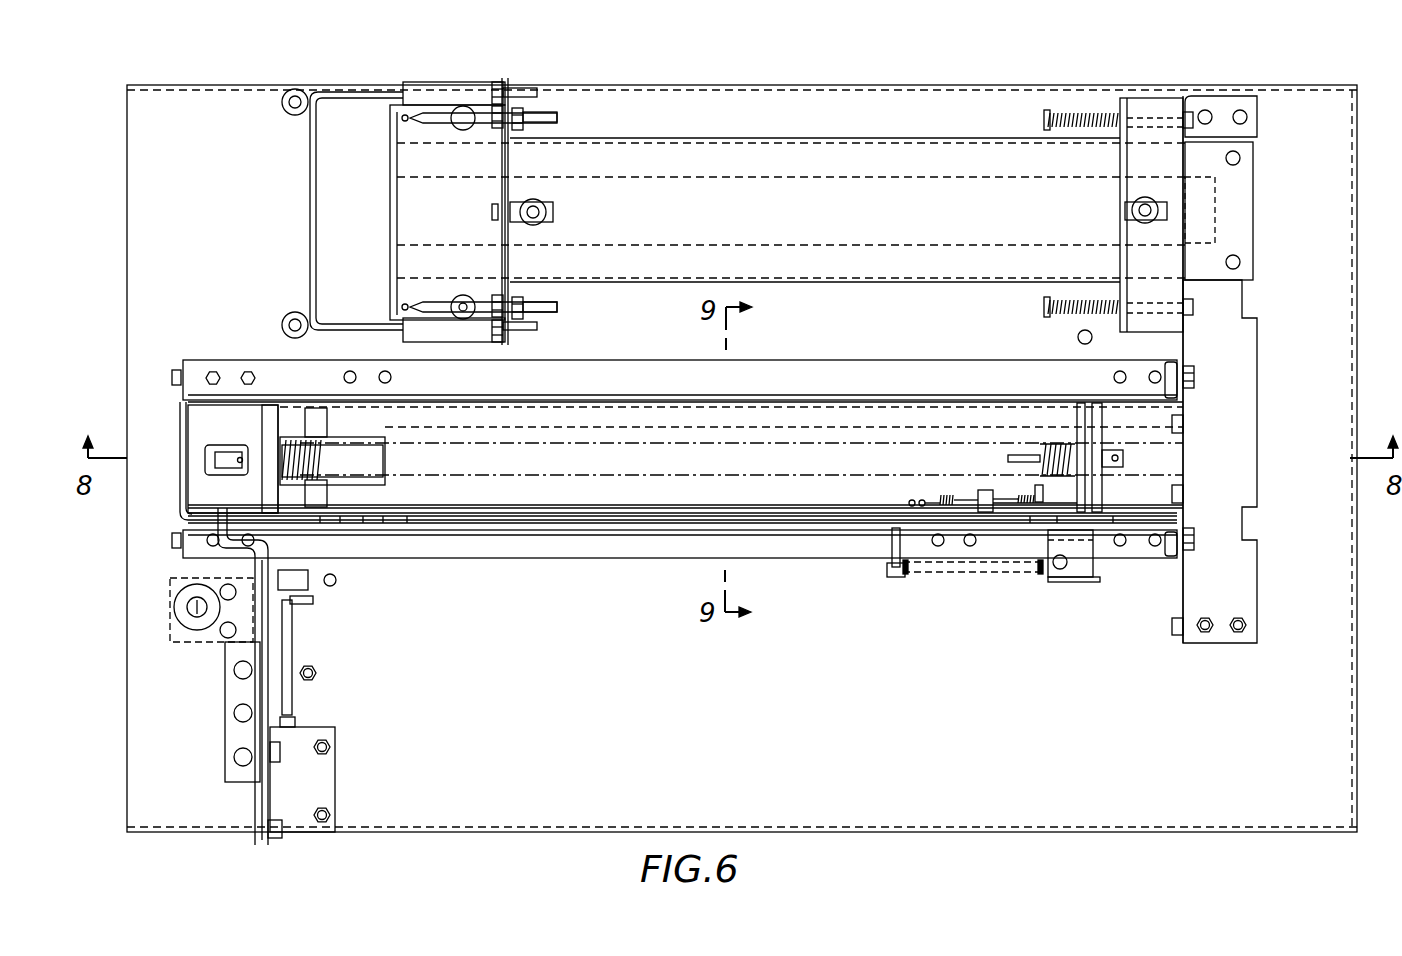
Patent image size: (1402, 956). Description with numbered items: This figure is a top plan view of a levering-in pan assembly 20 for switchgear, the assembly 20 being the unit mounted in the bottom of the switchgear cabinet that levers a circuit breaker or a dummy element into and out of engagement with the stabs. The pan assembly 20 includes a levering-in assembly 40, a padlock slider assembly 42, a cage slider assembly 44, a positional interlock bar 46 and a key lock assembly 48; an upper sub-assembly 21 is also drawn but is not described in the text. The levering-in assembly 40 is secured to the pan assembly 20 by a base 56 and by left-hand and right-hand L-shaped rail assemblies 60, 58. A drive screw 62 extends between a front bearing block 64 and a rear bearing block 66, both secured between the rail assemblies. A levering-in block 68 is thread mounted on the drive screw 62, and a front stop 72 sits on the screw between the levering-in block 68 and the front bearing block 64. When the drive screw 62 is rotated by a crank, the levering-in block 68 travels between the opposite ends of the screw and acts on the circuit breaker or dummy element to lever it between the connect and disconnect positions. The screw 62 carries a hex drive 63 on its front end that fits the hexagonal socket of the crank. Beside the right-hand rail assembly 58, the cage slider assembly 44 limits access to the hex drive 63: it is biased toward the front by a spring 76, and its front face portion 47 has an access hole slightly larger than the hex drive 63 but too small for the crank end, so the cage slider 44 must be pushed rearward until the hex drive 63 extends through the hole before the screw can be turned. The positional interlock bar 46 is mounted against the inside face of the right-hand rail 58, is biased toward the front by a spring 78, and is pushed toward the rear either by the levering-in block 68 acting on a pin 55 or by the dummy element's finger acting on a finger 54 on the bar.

The levering-in pan assembly 20 is at (118, 690).
The actuator assembly 21 is at (470, 68).
The levering-in assembly 40 is at (387, 548).
The padlock slider assembly 42 is at (225, 730).
The cage slider assembly 44 is at (578, 536).
The positional interlock bar 46 is at (435, 522).
The front face portion 47 is at (182, 508).
The key lock assembly 48 is at (181, 600).
The finger 54 is at (977, 493).
The pin 55 is at (1042, 503).
The base 56 is at (675, 495).
The right hand L-shaped rail assembly 58 is at (775, 558).
The left hand L-shaped rail assembly 60 is at (563, 360).
The drive screw 62 is at (787, 440).
The hex drive 63 is at (205, 448).
The front bearing block 64 is at (263, 425).
The rear bearing block 66 is at (1103, 442).
The levering-in block 68 is at (313, 412).
The front stop 72 is at (282, 460).
The spring 76 is at (1008, 570).
The spring 78 is at (1020, 500).